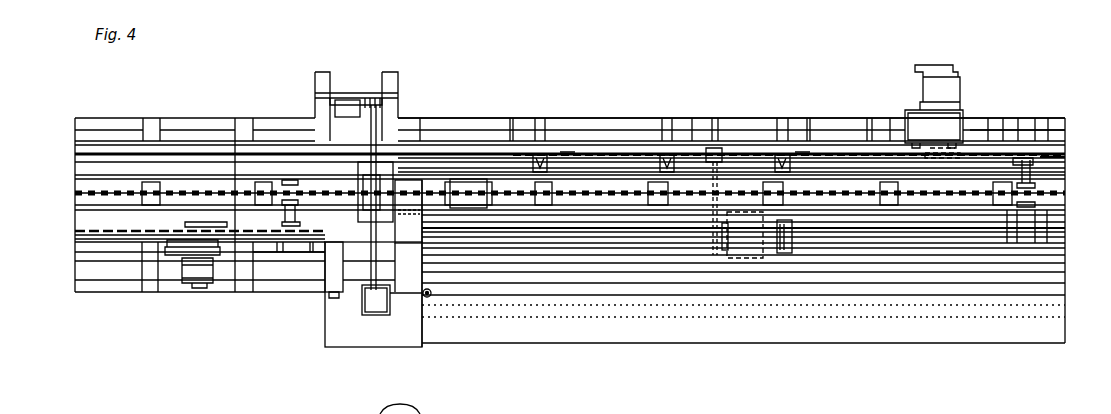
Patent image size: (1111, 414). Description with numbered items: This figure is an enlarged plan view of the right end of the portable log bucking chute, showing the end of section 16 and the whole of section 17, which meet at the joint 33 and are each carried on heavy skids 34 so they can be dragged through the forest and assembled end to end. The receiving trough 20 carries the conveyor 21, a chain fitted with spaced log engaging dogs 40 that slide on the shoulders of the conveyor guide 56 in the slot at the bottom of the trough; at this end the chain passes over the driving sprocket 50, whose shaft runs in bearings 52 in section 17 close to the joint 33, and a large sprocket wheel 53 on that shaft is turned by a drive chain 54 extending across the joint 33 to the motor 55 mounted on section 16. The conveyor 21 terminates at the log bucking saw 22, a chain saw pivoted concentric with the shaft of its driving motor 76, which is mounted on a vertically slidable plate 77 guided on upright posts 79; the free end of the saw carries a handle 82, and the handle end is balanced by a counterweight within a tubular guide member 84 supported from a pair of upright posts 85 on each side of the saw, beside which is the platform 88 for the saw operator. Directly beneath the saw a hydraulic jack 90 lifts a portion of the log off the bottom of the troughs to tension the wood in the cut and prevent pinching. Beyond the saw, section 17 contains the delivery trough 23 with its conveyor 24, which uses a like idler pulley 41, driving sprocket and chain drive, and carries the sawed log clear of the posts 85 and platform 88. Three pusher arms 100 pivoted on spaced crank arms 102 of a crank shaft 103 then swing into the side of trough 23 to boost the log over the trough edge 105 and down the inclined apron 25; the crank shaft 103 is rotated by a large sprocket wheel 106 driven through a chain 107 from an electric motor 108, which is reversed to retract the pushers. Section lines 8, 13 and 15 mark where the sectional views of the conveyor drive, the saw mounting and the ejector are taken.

The section line 8- 8 is at (274, 62).
The section line 13- 13 is at (380, 27).
The section line 15- 15 is at (664, 70).
The section 16 is at (97, 117).
The section 17 is at (475, 118).
The receiving trough 20 is at (75, 157).
The conveyor 21 is at (75, 193).
The log bucking saw 22 is at (377, 143).
The delivery trough 23 is at (467, 153).
The conveyor 24 is at (518, 194).
The inclined apron 25 is at (847, 325).
The joint 33 is at (235, 130).
The skids 34 is at (75, 118).
The log engaging dogs 40 is at (148, 202).
The idler pulley 41 is at (463, 201).
The driving sprocket 50 is at (312, 194).
The bearings 52 is at (1023, 137).
The large sprocket wheel 53 is at (1065, 157).
The drive chain 54 is at (975, 150).
The motor 55 is at (932, 87).
The conveyor guide 56 is at (75, 183).
The driving motor 76 is at (340, 110).
The vertically slidable plate 77 is at (352, 95).
The upright posts 79 is at (372, 93).
The handle 82 is at (370, 315).
The tubular guide member 84 is at (430, 298).
The upright posts 85 is at (333, 283).
The platform 88 is at (410, 345).
The hydraulic jack 90 is at (383, 188).
The pusher arms 100 is at (647, 150).
The crank arms 102 is at (545, 120).
The crank shaft 103 is at (618, 160).
The trough edge 105 is at (985, 232).
The large sprocket wheel 106 is at (714, 120).
The chain 107 is at (712, 245).
The electric motor 108 is at (772, 258).